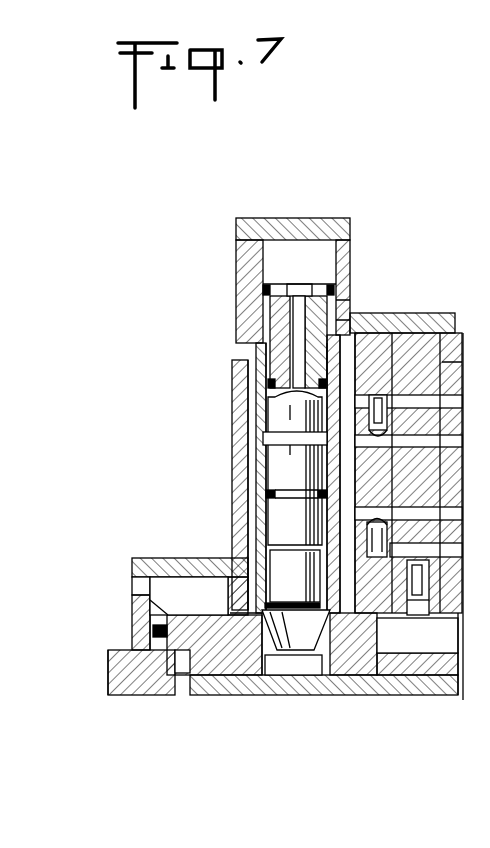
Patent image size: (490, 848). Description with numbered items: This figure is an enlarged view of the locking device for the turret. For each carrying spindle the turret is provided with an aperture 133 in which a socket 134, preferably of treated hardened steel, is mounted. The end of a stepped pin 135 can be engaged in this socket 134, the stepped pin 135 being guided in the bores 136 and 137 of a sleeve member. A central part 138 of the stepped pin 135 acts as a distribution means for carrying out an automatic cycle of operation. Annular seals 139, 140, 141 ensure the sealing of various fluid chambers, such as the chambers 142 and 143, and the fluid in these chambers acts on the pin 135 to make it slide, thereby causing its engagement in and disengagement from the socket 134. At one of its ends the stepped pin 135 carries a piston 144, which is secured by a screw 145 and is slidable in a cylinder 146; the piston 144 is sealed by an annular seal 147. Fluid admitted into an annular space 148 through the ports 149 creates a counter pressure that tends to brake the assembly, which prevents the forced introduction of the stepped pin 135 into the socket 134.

The aperture 133 is at (310, 668).
The socket 134 is at (253, 625).
The stepped pin 135 is at (285, 625).
The bore 136 is at (232, 572).
The bore 137 is at (255, 483).
The central part 138 is at (270, 456).
The annular seal 139 is at (228, 600).
The annular seal 140 is at (258, 493).
The annular seal 141 is at (266, 382).
The fluid chamber 142 is at (258, 531).
The fluid chamber 143 is at (262, 402).
The piston 144 is at (338, 262).
The screw 145 is at (300, 290).
The cylinder 146 is at (246, 267).
The annular seal 147 is at (336, 290).
The annular space 148 is at (375, 333).
The ports 149 is at (345, 320).